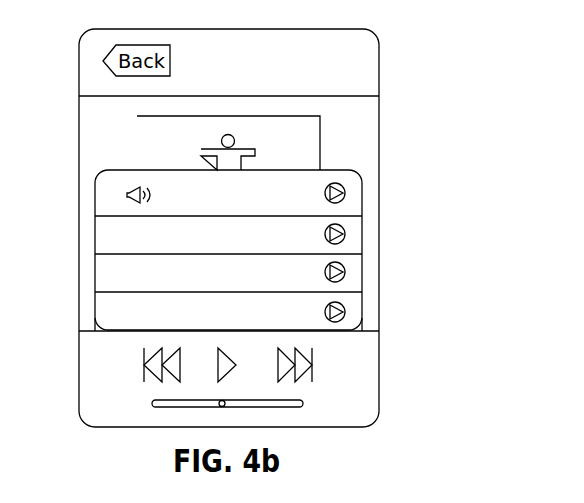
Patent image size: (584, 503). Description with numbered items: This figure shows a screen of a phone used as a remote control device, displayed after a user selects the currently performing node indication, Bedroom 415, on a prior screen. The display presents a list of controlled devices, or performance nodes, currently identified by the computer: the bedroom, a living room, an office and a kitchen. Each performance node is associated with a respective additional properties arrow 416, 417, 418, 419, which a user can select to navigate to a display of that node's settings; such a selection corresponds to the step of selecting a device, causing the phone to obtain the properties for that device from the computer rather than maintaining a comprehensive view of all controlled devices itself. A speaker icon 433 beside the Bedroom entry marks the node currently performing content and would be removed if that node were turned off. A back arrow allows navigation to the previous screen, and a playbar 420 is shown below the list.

The currently performing node indication 415 is at (181, 250).
The additional properties arrow 416 is at (346, 202).
The additional properties arrow 417 is at (346, 240).
The additional properties arrow 418 is at (346, 278).
The additional properties arrow 419 is at (346, 314).
The playbar 420 is at (156, 377).
The speaker icon 433 is at (124, 192).